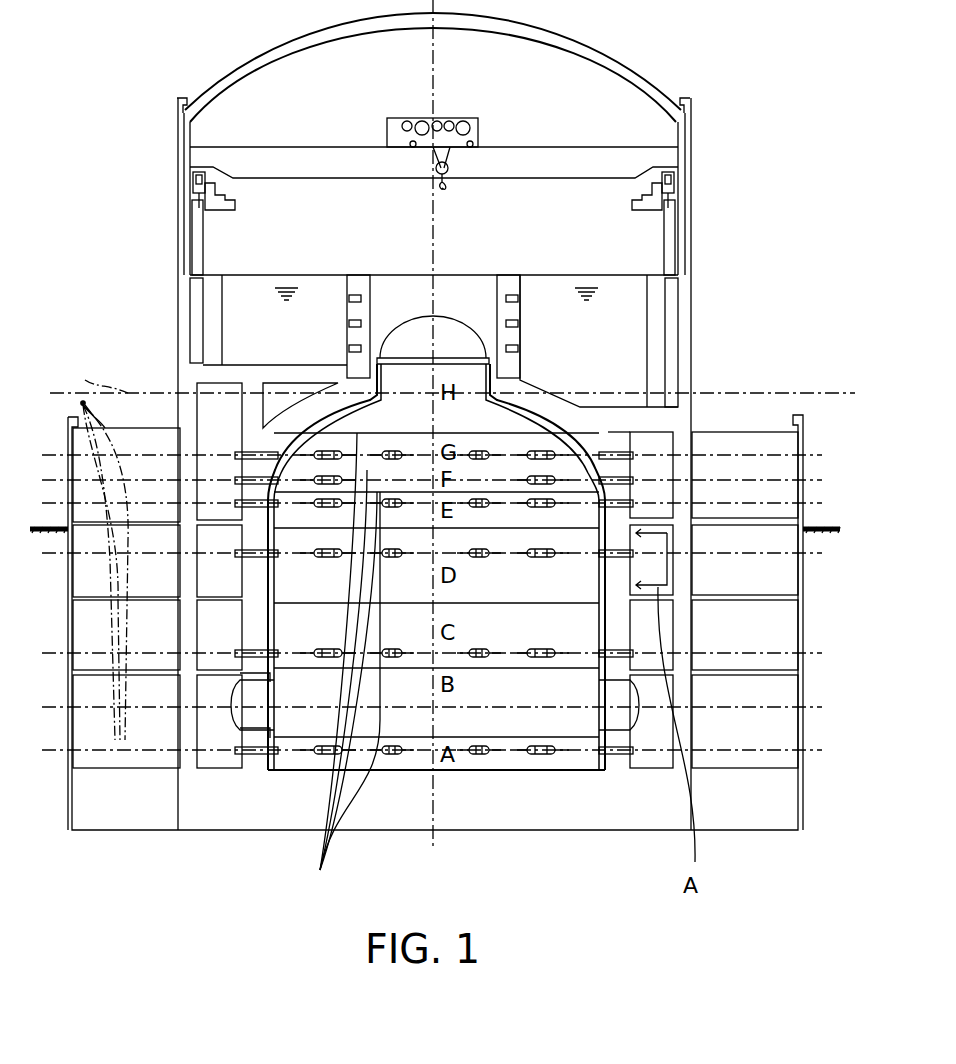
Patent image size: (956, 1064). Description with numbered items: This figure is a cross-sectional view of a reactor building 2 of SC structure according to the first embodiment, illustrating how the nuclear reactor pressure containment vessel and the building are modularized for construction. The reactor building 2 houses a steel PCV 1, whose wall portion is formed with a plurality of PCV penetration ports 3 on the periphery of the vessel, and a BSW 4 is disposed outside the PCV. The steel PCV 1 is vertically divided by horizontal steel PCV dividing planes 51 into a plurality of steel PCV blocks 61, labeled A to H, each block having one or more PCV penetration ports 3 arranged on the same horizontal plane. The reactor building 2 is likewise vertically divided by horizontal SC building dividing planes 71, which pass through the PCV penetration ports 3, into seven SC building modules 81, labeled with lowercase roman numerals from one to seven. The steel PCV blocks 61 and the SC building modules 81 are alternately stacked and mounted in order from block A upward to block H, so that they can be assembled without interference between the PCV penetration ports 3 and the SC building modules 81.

The steel PCV 1 is at (358, 402).
The reactor building 2 is at (631, 68).
The PCV penetration ports 3 is at (541, 452).
The BSW 4 is at (292, 417).
The steel PCV dividing planes 51 is at (343, 668).
The steel PCV blocks 61 is at (453, 707).
The SC building dividing planes 71 is at (83, 403).
The SC building modules 81 is at (762, 510).